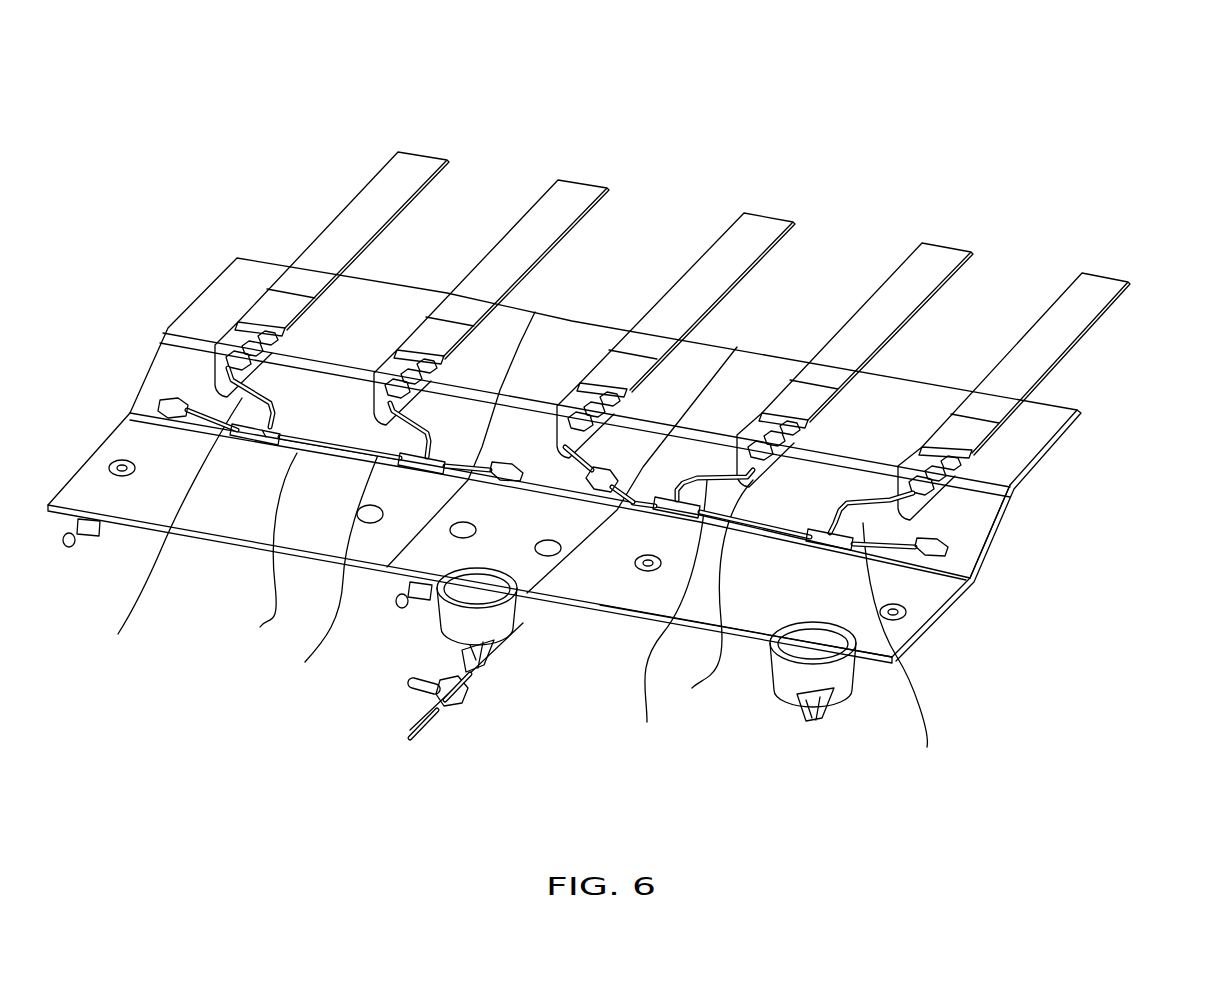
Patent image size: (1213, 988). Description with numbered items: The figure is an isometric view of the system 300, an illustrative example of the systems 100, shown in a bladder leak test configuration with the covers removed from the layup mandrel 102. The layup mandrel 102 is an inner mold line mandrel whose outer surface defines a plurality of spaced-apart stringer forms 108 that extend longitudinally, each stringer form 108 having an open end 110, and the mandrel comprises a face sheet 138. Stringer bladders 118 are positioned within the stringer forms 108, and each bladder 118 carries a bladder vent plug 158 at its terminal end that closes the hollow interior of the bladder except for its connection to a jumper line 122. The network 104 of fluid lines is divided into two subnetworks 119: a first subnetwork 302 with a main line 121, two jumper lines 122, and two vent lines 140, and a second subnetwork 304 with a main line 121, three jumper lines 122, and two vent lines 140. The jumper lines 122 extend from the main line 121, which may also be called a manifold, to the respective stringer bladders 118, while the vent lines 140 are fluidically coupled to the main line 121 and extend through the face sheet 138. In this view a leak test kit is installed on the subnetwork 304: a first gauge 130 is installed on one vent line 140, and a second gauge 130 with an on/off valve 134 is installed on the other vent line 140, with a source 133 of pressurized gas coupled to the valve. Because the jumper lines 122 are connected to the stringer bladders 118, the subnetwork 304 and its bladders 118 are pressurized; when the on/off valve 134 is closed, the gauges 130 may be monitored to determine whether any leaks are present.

The system 100 is at (1110, 72).
The system 300 is at (1084, 136).
The layup mandrel 102 is at (1062, 438).
The network of fluid lines 104 is at (962, 622).
The stringer form 108 is at (271, 264).
The open end 110 is at (208, 410).
The stringer bladder 118 is at (381, 168).
The subnetwork 119 is at (210, 590).
The main line 121 is at (489, 581).
The jumper line 122 is at (514, 585).
The gauge 130 is at (497, 618).
The source of pressurized gas 133 is at (417, 722).
The on/off valve 134 is at (465, 693).
The face sheet 138 is at (743, 630).
The vent line 140 is at (93, 529).
The bladder vent plug 158 is at (252, 303).
The first subnetwork 302 is at (205, 502).
The second subnetwork 304 is at (598, 567).